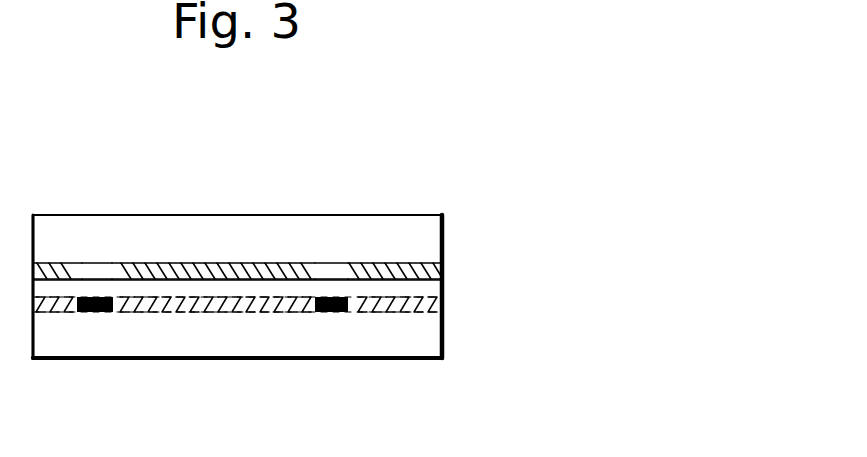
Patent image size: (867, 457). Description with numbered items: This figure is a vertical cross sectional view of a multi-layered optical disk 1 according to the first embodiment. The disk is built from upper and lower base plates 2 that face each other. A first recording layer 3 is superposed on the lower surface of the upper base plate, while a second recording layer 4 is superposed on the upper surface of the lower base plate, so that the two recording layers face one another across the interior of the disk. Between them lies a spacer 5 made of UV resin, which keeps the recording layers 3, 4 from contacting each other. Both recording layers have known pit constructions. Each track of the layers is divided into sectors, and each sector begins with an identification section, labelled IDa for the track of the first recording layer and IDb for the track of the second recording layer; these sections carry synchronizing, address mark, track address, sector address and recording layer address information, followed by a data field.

The multi-layered optical disk 1 is at (310, 217).
The base plates 2 is at (405, 337).
The first recording layer 3 is at (442, 272).
The second recording layer 4 is at (442, 310).
The spacer 5 is at (442, 292).
The identification section IDa is at (330, 265).
The identification section IDb is at (318, 313).